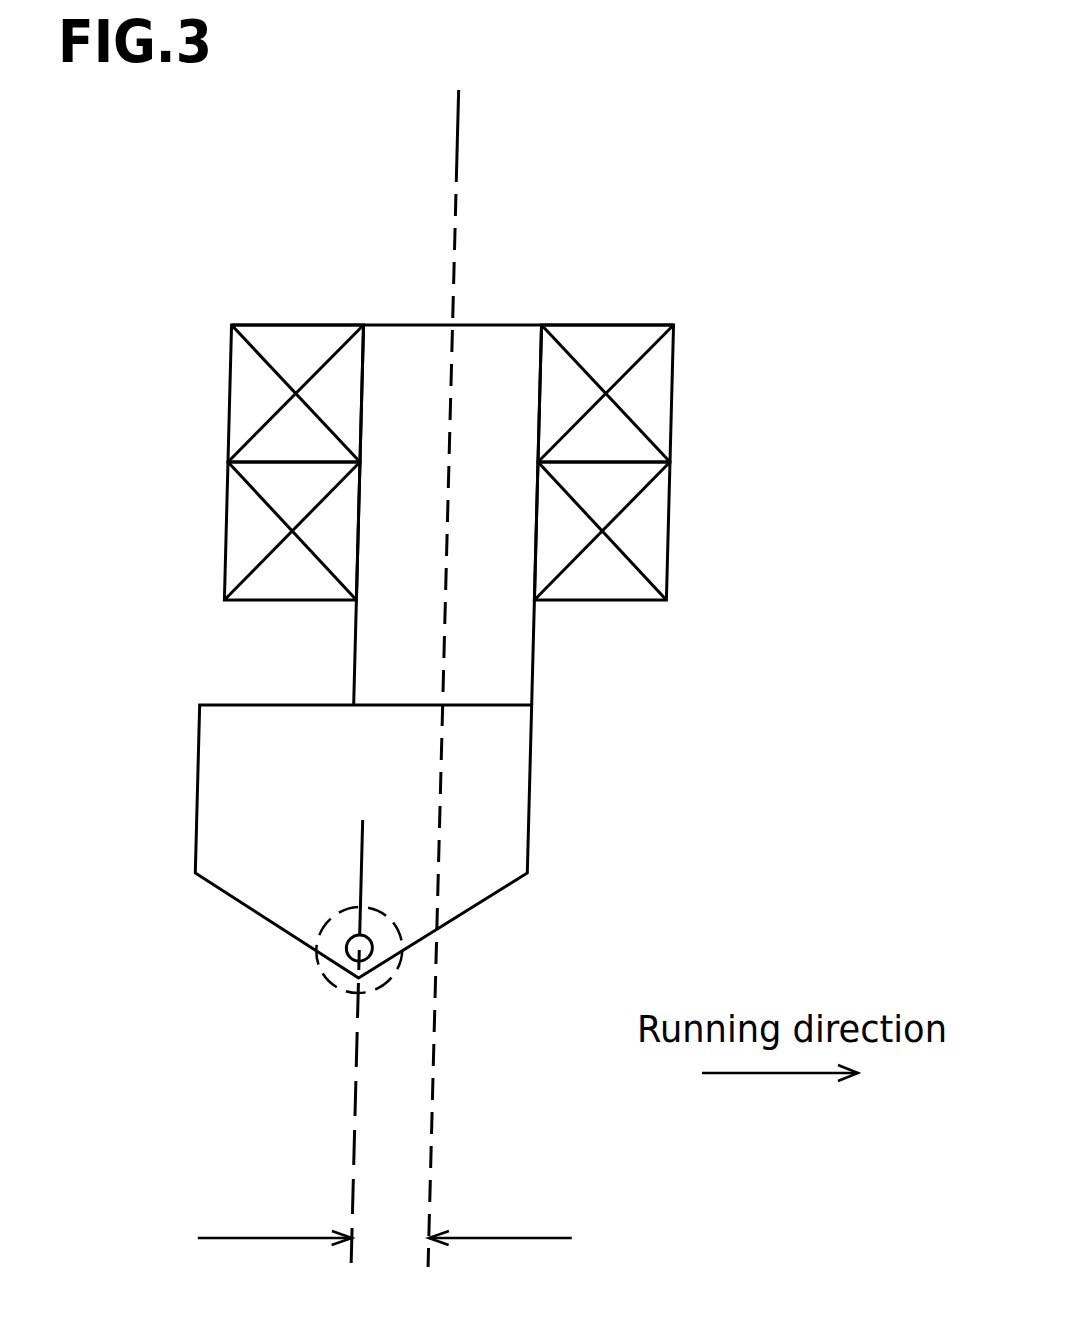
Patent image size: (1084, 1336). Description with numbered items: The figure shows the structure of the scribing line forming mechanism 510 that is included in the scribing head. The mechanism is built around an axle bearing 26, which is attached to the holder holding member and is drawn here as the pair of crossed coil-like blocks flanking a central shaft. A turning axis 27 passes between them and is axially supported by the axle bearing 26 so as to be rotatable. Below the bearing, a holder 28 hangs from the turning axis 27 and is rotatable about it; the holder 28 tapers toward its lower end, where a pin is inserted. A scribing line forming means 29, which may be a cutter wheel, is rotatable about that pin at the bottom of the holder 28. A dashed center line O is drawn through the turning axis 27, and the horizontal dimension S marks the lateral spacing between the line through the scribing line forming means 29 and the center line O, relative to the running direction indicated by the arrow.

The scribing line forming mechanism 510 is at (158, 226).
The center line of core O is at (458, 160).
The turning axis 27 is at (498, 342).
The axle bearing 26 is at (673, 517).
The holder 28 is at (497, 798).
The scribing line forming means 29 is at (343, 980).
The offset distance S is at (360, 1247).